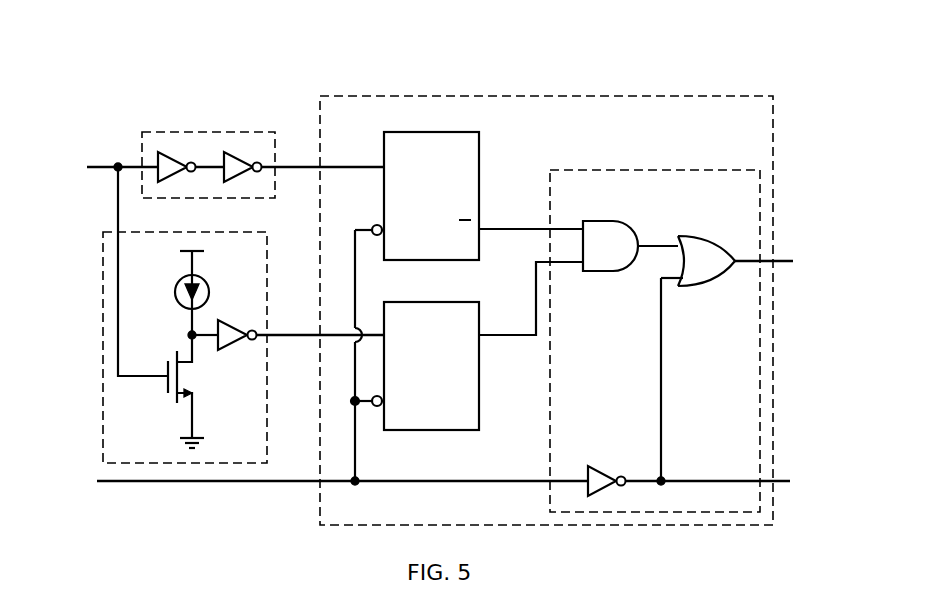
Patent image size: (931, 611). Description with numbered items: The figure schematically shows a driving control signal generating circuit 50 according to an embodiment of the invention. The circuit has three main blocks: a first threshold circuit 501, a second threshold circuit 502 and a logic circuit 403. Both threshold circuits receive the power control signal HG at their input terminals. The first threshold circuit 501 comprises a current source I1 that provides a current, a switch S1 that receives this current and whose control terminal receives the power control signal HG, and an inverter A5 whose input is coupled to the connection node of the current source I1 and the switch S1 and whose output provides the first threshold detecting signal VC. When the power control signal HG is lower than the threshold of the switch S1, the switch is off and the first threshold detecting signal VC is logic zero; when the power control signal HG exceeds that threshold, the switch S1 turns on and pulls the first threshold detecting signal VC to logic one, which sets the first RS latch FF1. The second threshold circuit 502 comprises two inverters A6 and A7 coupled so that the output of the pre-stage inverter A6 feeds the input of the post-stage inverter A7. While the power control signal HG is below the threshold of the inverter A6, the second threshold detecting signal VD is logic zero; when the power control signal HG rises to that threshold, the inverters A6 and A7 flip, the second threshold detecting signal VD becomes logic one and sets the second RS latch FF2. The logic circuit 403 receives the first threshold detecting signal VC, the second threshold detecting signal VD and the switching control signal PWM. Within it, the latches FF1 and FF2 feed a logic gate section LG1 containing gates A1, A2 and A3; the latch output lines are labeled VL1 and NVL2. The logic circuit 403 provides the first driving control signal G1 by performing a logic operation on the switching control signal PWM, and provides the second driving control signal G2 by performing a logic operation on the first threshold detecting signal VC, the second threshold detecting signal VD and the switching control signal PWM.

The driving control signal generating circuit 50 is at (441, 61).
The logic circuit 403 is at (684, 126).
The first threshold circuit 501 is at (149, 459).
The second threshold circuit 502 is at (141, 140).
The logic gate unit LG1 is at (745, 197).
The first RS latch FF1 is at (431, 353).
The second RS latch FF2 is at (431, 184).
The AND gate A1 is at (630, 235).
The OR gate A2 is at (698, 250).
The inverter A3 is at (607, 471).
The inverter A5 is at (237, 324).
The inverter A6 is at (177, 160).
The inverter A7 is at (243, 160).
The current source I1 is at (182, 293).
The switch S1 is at (169, 307).
The power control signal HG is at (138, 167).
The switching control signal PWM is at (315, 481).
The second threshold detecting signal VD is at (322, 155).
The first threshold detecting signal VC is at (320, 324).
The inverted output of FF2 NVL2 is at (531, 217).
The output of FF1 VL1 is at (531, 298).
The first driving control signal G1 is at (726, 481).
The second driving control signal G2 is at (781, 261).